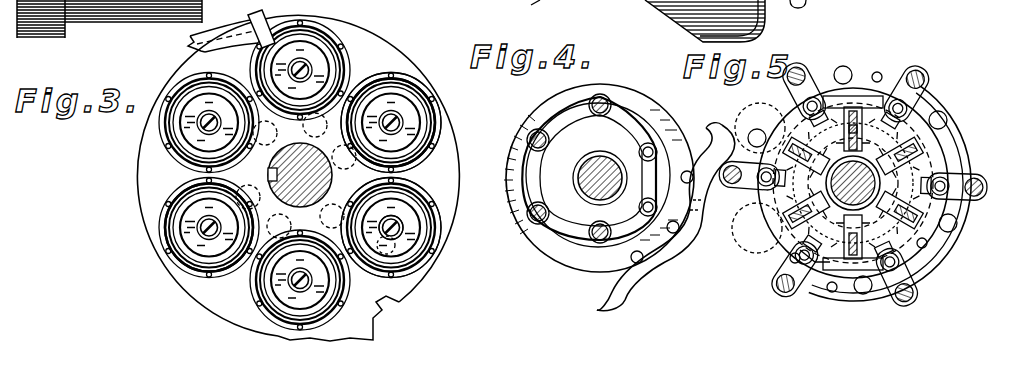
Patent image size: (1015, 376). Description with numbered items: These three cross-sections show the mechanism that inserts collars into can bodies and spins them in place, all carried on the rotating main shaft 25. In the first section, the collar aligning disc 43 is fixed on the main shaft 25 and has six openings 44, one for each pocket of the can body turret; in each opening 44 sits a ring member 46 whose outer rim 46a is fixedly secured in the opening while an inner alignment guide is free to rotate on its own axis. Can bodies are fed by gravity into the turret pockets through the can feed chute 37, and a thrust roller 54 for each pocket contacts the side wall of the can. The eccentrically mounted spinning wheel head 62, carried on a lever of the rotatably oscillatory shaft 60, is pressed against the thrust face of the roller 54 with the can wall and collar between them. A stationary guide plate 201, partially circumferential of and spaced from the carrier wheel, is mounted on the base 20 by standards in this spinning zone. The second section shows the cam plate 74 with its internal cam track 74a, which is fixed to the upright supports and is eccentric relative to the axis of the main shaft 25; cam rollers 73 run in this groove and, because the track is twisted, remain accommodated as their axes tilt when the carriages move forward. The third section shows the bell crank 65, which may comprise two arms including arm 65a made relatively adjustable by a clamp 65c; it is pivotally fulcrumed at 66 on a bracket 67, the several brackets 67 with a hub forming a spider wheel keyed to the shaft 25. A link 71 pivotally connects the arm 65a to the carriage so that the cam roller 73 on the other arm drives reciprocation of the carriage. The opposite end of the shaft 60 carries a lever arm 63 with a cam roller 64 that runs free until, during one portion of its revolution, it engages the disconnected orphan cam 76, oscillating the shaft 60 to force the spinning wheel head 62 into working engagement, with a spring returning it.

In FIG. 4, the base 20 is at (531, 5).
In FIG. 3, the main shaft 25 is at (293, 163).
In FIG. 4, the main shaft 25 is at (593, 178).
In FIG. 3, the can feed chute 37 is at (188, 50).
In FIG. 3, the collar aligning disc 43 is at (383, 50).
In FIG. 3, the openings 44 is at (348, 34).
In FIG. 3, the ring member 46 is at (417, 95).
In FIG. 3, the outer rim 46a is at (435, 115).
In FIG. 3, the thrust roller 54 is at (333, 172).
In FIG. 3, the rotatably oscillatory shaft 60 is at (388, 248).
In FIG. 5, the rotatably oscillatory shaft 60 is at (843, 68).
In FIG. 3, the spinning wheel head 62 is at (405, 230).
In FIG. 5, the spinning wheel head 62 is at (748, 112).
In FIG. 5, the lever arm 63 is at (877, 70).
In FIG. 5, the cam roller 64 is at (892, 70).
In FIG. 5, the bell crank 65 is at (785, 150).
In FIG. 5, the bell crank arm 65a is at (857, 112).
In FIG. 5, the clamp 65c is at (942, 110).
In FIG. 5, the pivotal fulcrum 66 is at (900, 102).
In FIG. 5, the bracket 67 is at (920, 183).
In FIG. 5, the link 71 is at (862, 130).
In FIG. 4, the cam roller 73 is at (605, 100).
In FIG. 5, the cam roller 73 is at (795, 260).
In FIG. 4, the cam plate 74 is at (672, 130).
In FIG. 5, the cam plate 74 is at (808, 95).
In FIG. 4, the internal cam track 74a is at (557, 123).
In FIG. 5, the internal cam track 74a is at (805, 275).
In FIG. 4, the orphan cam 76 is at (672, 262).
In FIG. 5, the orphan cam 76 is at (915, 275).
In FIG. 3, the guide plate 201 is at (380, 302).